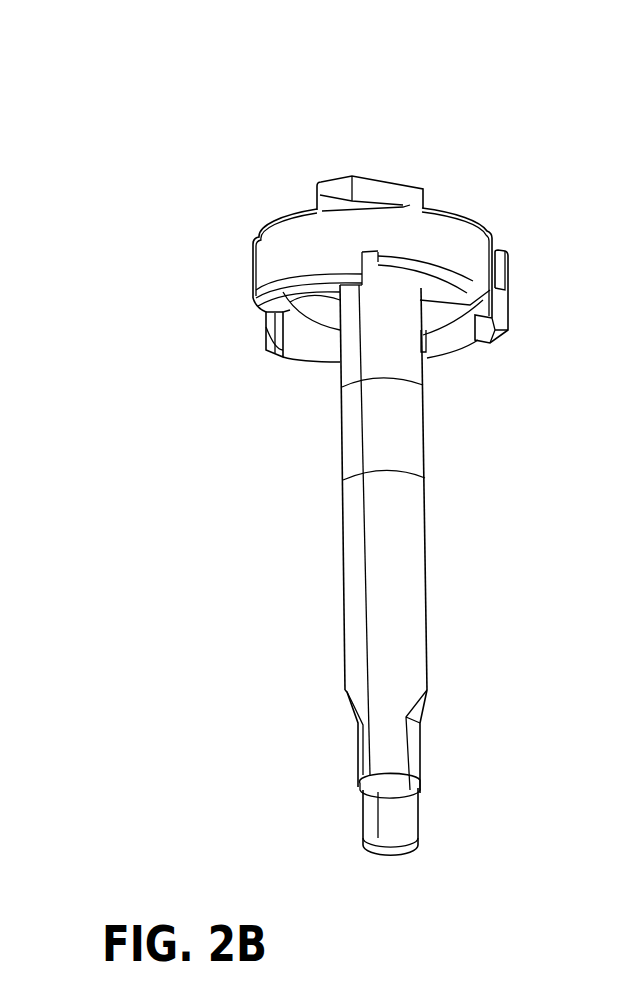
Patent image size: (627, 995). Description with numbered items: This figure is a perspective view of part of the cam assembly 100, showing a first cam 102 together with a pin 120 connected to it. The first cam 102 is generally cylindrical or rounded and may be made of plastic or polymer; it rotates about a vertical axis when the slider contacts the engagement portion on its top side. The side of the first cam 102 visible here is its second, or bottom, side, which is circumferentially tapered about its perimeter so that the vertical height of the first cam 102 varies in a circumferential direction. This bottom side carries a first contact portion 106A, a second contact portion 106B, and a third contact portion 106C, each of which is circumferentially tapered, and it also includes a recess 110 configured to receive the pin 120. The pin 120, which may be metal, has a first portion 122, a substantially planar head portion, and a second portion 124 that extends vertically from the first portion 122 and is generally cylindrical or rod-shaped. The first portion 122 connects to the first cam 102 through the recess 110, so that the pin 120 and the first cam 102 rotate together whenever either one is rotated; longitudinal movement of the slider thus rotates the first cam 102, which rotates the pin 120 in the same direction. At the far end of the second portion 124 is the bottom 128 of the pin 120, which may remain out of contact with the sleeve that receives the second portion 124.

The cam assembly 100 is at (376, 138).
The first cam 102 is at (290, 212).
The first contact portion 106A is at (480, 297).
The second contact portion 106B is at (424, 345).
The third contact portion 106C is at (256, 267).
The recess 110 is at (272, 340).
The pin 120 is at (442, 607).
The first portion 122 is at (432, 290).
The second portion 124 is at (318, 430).
The bottom 128 is at (428, 845).